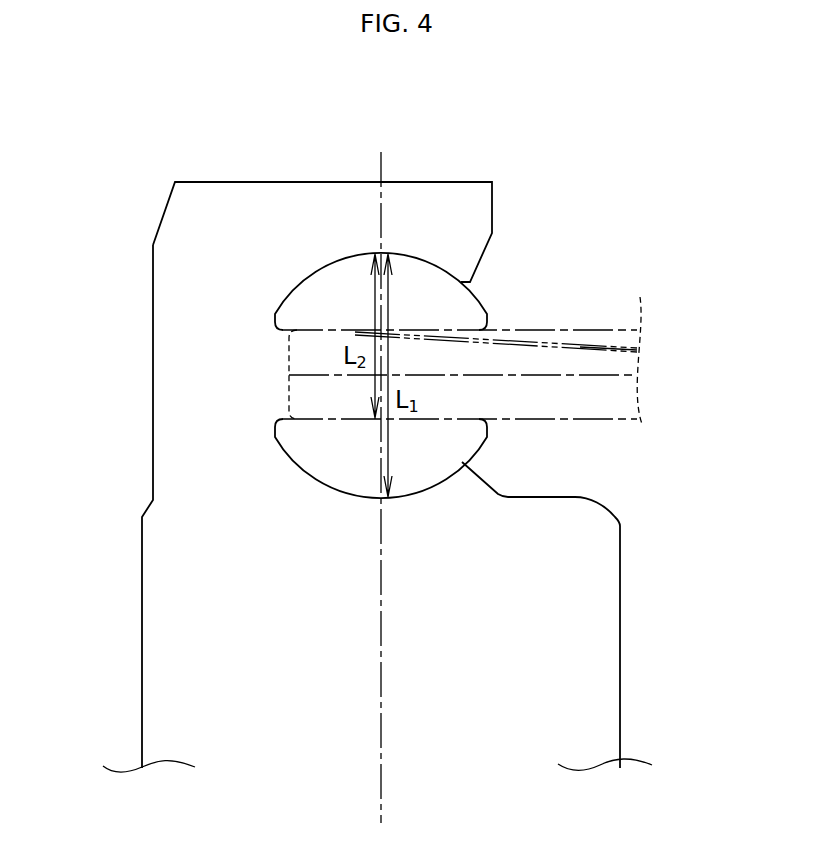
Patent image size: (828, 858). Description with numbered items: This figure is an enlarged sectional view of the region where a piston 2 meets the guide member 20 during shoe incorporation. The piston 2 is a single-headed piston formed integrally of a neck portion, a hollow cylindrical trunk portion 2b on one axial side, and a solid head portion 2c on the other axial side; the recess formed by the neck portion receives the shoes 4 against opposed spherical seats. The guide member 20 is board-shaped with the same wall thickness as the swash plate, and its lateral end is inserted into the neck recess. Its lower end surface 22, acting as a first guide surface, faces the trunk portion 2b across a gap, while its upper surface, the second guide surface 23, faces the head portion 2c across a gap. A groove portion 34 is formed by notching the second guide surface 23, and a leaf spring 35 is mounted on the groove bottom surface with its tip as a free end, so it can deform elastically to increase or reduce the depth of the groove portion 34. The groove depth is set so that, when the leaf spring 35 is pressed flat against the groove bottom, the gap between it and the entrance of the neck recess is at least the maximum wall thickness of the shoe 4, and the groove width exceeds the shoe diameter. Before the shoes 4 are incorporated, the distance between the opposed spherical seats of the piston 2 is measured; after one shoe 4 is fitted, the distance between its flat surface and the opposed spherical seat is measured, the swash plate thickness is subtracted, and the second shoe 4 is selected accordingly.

The piston 2 is at (348, 453).
The trunk portion 2b is at (168, 366).
The head portion 2c is at (291, 202).
The shoe 4 is at (480, 303).
The guide member 20 is at (505, 361).
The lower end surface 22 is at (582, 420).
The second guide surface 23 is at (580, 340).
The groove portion 34 is at (542, 372).
The leaf spring 35 is at (610, 348).